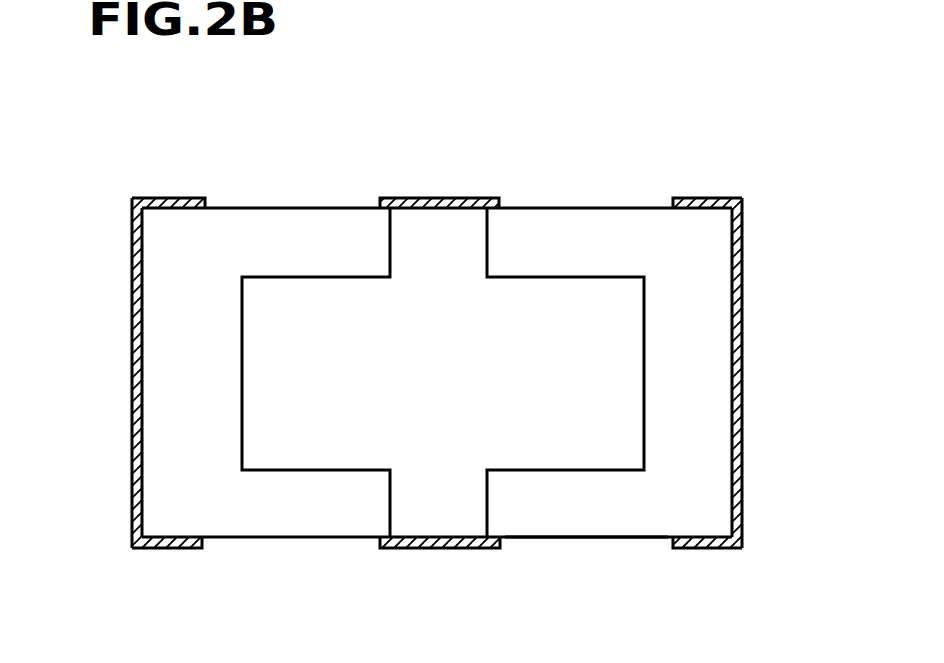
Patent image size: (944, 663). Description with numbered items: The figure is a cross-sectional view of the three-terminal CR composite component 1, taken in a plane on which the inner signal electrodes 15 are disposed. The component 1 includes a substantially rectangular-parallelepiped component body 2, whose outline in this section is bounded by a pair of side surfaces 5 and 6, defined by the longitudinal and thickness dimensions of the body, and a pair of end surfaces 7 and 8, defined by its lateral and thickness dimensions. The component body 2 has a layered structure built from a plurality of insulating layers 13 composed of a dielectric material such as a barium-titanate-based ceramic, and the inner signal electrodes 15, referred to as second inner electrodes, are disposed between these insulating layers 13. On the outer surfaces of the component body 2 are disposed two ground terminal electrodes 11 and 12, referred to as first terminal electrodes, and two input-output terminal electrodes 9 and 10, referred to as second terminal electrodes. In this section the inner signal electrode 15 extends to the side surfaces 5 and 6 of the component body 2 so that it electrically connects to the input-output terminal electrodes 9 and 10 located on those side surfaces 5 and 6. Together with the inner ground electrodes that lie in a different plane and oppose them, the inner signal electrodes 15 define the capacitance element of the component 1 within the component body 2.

The three-terminal CR composite component 1 is at (124, 124).
The component body 2 is at (590, 208).
The side surface 5 is at (592, 540).
The side surface 6 is at (289, 207).
The end surface 7 is at (733, 357).
The end surface 8 is at (142, 393).
The input-output terminal electrode 9 is at (435, 548).
The input-output terminal electrode 10 is at (431, 198).
The ground terminal electrode 11 is at (745, 470).
The ground terminal electrode 12 is at (142, 476).
The insulating layer 13 is at (685, 277).
The inner signal electrode 15 is at (300, 448).